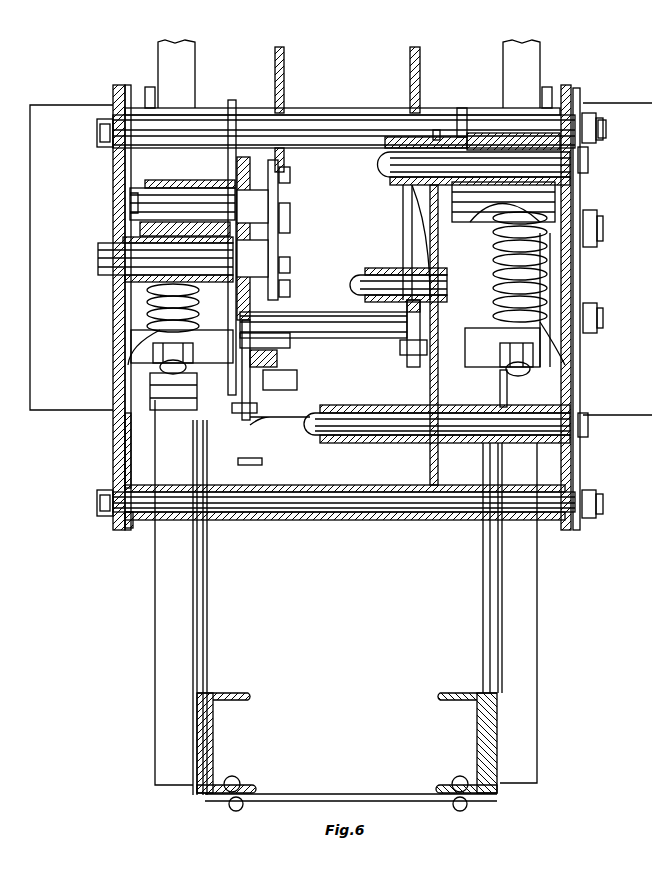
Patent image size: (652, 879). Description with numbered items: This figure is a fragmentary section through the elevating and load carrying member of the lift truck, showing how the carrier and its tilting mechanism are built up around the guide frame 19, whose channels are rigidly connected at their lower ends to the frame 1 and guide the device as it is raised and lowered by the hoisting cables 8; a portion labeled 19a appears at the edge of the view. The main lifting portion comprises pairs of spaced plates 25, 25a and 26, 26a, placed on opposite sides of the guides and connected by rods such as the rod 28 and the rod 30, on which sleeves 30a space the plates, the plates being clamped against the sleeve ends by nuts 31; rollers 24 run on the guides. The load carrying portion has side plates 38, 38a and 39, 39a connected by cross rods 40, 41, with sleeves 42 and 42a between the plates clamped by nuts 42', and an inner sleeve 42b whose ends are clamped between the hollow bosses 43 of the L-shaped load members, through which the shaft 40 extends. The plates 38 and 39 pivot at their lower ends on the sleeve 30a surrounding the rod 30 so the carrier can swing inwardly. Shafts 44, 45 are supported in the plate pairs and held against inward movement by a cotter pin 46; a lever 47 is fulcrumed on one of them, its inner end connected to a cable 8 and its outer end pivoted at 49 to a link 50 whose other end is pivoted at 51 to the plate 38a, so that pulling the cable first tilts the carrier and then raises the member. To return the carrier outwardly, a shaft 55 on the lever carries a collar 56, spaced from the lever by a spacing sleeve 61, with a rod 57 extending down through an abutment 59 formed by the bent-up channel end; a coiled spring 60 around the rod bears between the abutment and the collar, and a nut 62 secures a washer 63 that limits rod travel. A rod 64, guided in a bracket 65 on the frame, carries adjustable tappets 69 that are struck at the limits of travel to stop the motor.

The frame 1 is at (226, 693).
The flexible hoisting elements 8 is at (284, 75).
The guide frame 19 is at (155, 608).
The frame wall 19a is at (326, 309).
The roller 24 is at (150, 88).
The plate 25 is at (462, 108).
The outer plate 25a is at (572, 380).
The plate 26 is at (232, 110).
The outer plate 26a is at (113, 380).
The rod 28 is at (606, 128).
The rod 30 is at (460, 520).
The sleeve 30a is at (340, 150).
The nut 31 is at (98, 145).
The side plate 38 is at (576, 528).
The side plate 38a is at (436, 445).
The side plate 39 is at (128, 528).
The side plate 39a is at (240, 360).
The cross rod 40 is at (385, 166).
The cross rod 41 is at (370, 436).
The sleeve 42 is at (454, 194).
The nut 42' is at (605, 302).
The sleeve 42a is at (436, 130).
The sleeve 42b is at (395, 137).
The hollow boss 43 is at (485, 133).
The shaft 44 is at (598, 262).
The shaft 45 is at (100, 265).
The cotter pin 46 is at (115, 240).
The lever 47 is at (403, 236).
The pivotal connection 49 is at (405, 345).
The link 50 is at (395, 270).
The pivotal connection 51 is at (358, 280).
The shaft 55 is at (130, 200).
The collar 56 is at (548, 200).
The rod 57 is at (160, 340).
The abutment 59 is at (128, 352).
The spring 60 is at (158, 292).
The spacing sleeve 61 is at (212, 183).
The nut 62 is at (188, 374).
The washer 63 is at (188, 350).
The rod 64 is at (262, 470).
The bracket 65 is at (262, 462).
The adjustable tappet 69 is at (258, 409).